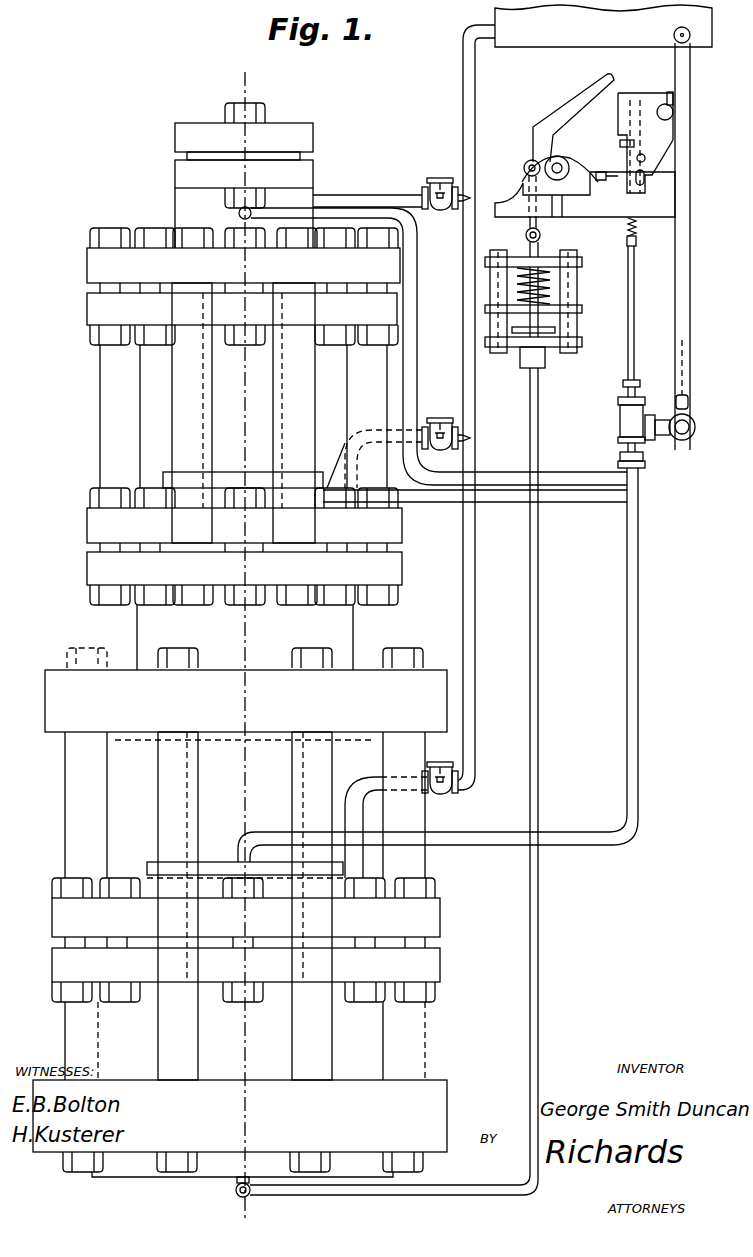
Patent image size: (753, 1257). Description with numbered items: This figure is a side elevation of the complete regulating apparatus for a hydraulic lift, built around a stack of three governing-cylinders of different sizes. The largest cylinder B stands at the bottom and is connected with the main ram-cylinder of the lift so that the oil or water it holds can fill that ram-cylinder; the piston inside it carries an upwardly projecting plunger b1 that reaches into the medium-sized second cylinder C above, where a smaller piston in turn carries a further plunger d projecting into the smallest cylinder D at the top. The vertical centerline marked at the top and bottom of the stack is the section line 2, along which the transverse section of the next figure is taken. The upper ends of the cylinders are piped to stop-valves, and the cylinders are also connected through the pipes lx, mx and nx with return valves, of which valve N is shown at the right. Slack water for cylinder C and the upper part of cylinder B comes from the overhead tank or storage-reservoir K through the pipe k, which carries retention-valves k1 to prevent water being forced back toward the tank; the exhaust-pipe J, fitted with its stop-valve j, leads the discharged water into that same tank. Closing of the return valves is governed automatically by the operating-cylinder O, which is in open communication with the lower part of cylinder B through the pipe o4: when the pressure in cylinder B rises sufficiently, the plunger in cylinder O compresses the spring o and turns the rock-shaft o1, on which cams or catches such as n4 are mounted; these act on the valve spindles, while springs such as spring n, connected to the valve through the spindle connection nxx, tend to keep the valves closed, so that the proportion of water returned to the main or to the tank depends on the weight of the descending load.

The section line 2 2 is at (242, 647).
The smallest cylinder D is at (244, 175).
The plunger d is at (244, 449).
The second cylinder C is at (246, 680).
The plunger b1 is at (246, 906).
The cylinder B is at (240, 1113).
The overhead tank or storage-reservoir K is at (603, 26).
The pipe k is at (478, 118).
The retention-valve k1 is at (445, 808).
The pipe to valve L lx is at (417, 348).
The pipe to valve M mx is at (582, 500).
The pipe to valve N nx is at (627, 668).
The pipe o4 is at (530, 621).
The rock-shaft o1 is at (562, 161).
The cam or catch for valve N n4 is at (526, 167).
The spring o is at (542, 266).
The operating-cylinder O is at (533, 309).
The spring for valve N n is at (627, 340).
The spindle connection of valve N nxx is at (634, 235).
The exhaust-pipe J is at (673, 299).
The stop-valve j is at (677, 402).
The valve N is at (656, 424).